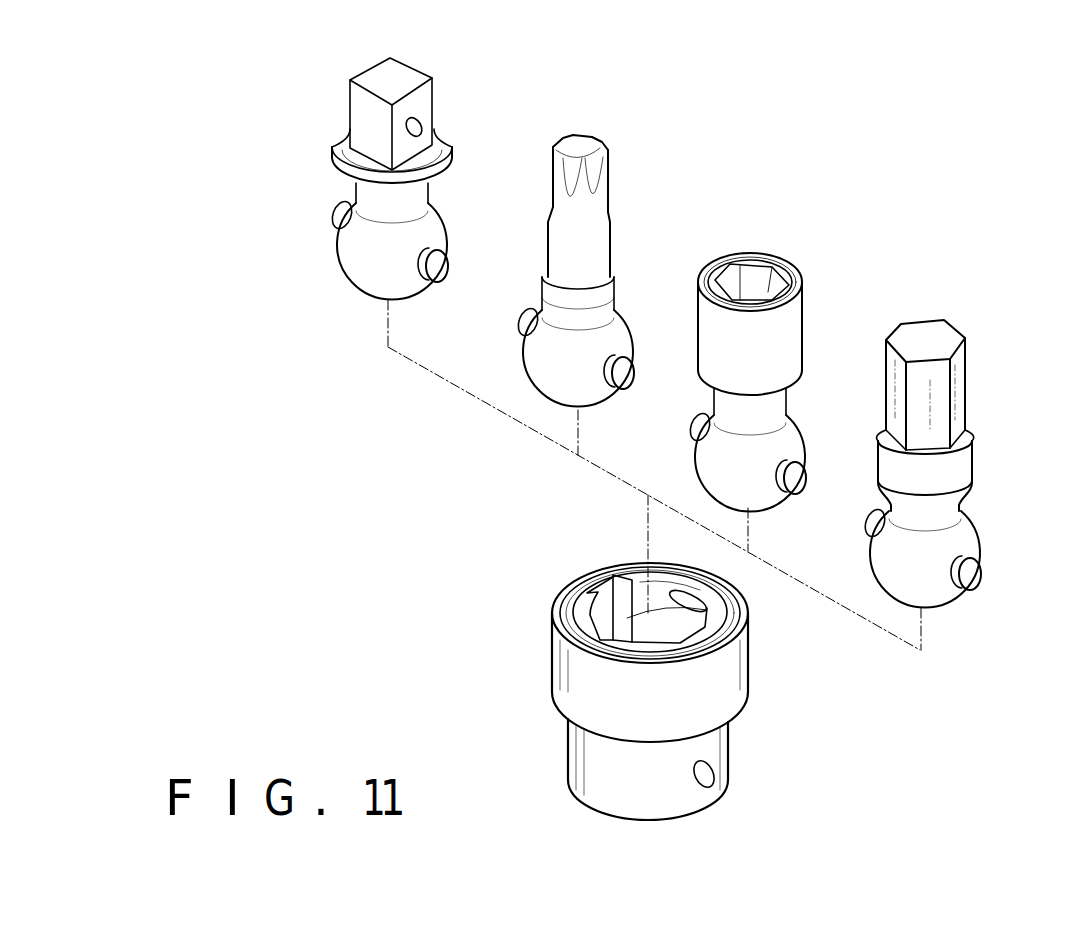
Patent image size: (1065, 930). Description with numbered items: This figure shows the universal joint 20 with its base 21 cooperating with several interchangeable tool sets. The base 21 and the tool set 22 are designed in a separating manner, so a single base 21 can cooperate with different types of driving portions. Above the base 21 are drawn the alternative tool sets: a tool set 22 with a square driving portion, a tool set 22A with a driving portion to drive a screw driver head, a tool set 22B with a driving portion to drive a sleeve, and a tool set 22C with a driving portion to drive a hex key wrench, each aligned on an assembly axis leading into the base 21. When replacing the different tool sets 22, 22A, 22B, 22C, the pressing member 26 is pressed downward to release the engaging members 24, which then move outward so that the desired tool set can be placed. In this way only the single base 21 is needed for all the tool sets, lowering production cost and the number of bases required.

The universal joint 20 is at (553, 593).
The base 21 is at (575, 762).
The tool set 22 is at (427, 102).
The tool set 22A is at (597, 178).
The tool set 22B is at (795, 272).
The tool set 22C is at (943, 338).
The engaging members 24 is at (682, 602).
The pressing member 26 is at (559, 672).